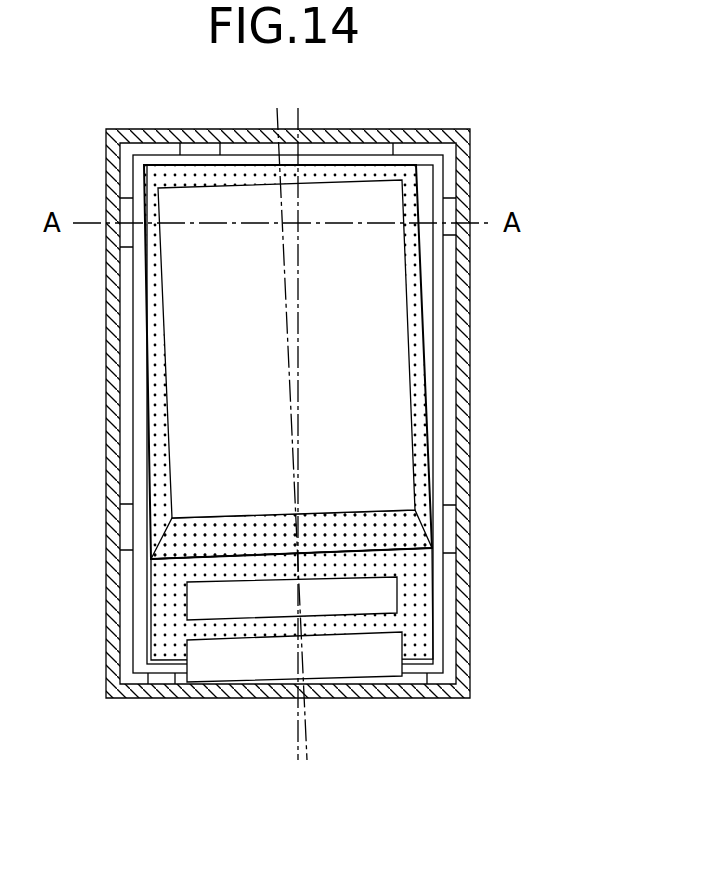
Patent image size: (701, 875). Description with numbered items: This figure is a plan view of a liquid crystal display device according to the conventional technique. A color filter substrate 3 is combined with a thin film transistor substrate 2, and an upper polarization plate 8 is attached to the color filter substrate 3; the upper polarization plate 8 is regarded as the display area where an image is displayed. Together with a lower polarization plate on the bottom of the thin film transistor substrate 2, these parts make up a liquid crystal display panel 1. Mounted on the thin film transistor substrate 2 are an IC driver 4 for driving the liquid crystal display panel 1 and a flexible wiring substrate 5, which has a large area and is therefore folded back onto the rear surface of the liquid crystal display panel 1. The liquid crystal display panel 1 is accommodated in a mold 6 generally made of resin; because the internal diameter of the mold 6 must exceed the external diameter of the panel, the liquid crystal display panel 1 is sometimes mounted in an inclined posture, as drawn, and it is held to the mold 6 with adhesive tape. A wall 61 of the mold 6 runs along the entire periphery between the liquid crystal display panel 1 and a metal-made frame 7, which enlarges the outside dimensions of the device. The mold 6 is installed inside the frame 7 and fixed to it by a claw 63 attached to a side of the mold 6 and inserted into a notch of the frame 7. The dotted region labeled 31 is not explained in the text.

The liquid crystal display panel 1 is at (398, 393).
The thin film transistor substrate 2 is at (420, 645).
The color filter substrate 3 is at (395, 533).
The IC driver 4 is at (393, 592).
The flexible wiring substrate 5 is at (388, 663).
The mold 6 is at (355, 413).
The frame 7 is at (112, 391).
The upper polarization plate 8 is at (373, 351).
The frame-shaped member 31 is at (393, 207).
The wall 61 is at (438, 405).
The claw 63 is at (446, 236).